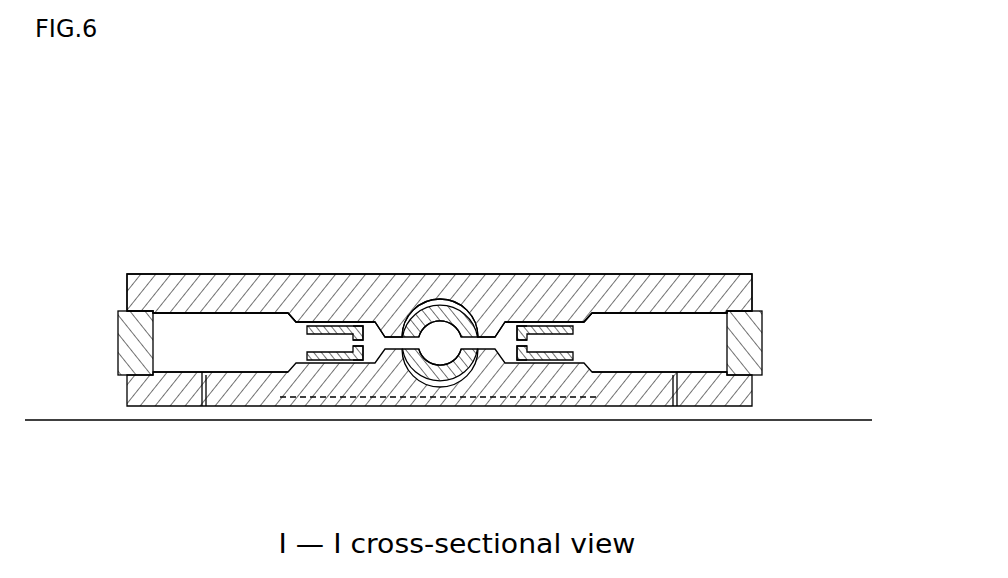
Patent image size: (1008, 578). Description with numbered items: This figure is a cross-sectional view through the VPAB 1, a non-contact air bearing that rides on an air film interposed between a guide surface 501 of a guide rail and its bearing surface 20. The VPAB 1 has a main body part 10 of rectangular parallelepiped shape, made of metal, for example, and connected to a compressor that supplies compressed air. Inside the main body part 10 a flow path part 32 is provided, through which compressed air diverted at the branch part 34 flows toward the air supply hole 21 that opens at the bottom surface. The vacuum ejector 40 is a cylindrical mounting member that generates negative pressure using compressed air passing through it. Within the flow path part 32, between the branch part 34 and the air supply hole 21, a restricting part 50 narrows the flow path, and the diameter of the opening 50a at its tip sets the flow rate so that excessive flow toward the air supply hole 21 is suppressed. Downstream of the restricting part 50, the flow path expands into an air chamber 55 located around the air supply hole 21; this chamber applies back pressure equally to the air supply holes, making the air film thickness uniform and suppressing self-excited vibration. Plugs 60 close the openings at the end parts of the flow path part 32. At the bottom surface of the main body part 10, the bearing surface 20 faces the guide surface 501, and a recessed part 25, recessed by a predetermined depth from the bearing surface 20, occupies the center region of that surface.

The VPAB 1 is at (455, 160).
The main body part 10 is at (384, 274).
The bearing surface 20 is at (258, 407).
The air supply hole 21 is at (202, 407).
The recessed part 25 is at (374, 407).
The flow path part 32 is at (262, 312).
The branch part 34 is at (452, 335).
The vacuum ejector 40 is at (445, 330).
The restricting part 50 is at (295, 343).
The opening 50a is at (350, 332).
The air chamber 55 is at (190, 333).
The plug 60 is at (127, 345).
The guide surface 501 is at (835, 418).